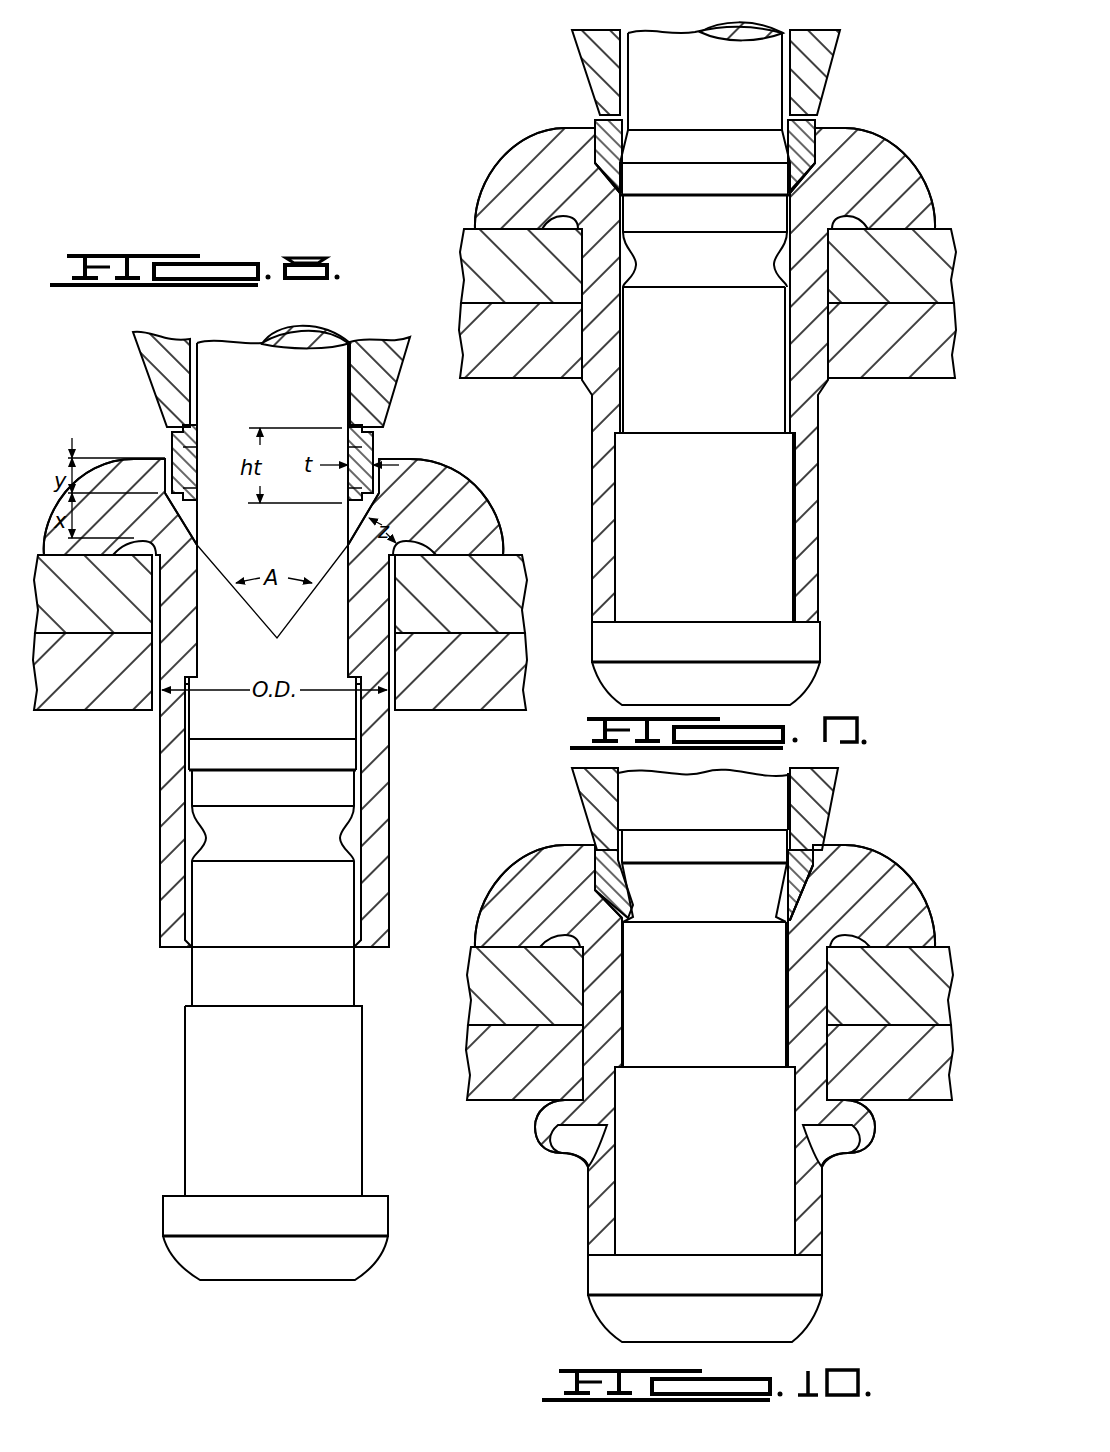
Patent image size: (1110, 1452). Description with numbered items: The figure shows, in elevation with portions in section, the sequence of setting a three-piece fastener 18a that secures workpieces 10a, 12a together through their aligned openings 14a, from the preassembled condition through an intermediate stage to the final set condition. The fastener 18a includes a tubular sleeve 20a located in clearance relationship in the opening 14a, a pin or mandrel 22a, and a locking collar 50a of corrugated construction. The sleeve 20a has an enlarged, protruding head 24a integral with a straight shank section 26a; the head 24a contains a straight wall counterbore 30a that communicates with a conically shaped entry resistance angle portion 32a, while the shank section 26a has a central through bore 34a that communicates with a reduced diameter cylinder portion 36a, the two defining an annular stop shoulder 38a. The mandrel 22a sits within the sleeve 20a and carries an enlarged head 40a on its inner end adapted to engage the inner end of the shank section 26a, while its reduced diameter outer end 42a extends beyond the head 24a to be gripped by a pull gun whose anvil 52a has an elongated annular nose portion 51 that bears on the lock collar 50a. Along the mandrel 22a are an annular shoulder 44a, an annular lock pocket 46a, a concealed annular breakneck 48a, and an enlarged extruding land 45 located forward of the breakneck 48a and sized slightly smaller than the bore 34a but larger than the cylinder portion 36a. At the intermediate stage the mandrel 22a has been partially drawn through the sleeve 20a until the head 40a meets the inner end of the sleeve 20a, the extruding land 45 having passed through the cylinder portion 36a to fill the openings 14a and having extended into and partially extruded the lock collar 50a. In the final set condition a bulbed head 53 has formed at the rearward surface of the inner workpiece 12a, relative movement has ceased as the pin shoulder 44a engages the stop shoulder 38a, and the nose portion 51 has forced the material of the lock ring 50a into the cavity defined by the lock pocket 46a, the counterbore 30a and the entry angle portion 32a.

In FIG. 8, the workpiece 10a is at (78, 611).
In FIG. 9, the workpiece 10a is at (506, 268).
In FIG. 10, the workpiece 10a is at (510, 988).
In FIG. 8, the workpiece 12a is at (80, 681).
In FIG. 9, the workpiece 12a is at (512, 358).
In FIG. 10, the workpiece 12a is at (514, 1078).
In FIG. 8, the aligned openings 14a is at (152, 606).
In FIG. 9, the aligned openings 14a is at (590, 278).
In FIG. 10, the aligned openings 14a is at (590, 1002).
In FIG. 8, the fastener 18a is at (150, 966).
In FIG. 9, the fastener 18a is at (838, 546).
In FIG. 10, the fastener 18a is at (846, 1236).
In FIG. 8, the tubular sleeve 20a is at (393, 790).
In FIG. 9, the tubular sleeve 20a is at (822, 428).
In FIG. 10, the tubular sleeve 20a is at (705, 1050).
In FIG. 8, the pin or mandrel 22a is at (365, 983).
In FIG. 9, the pin or mandrel 22a is at (796, 514).
In FIG. 10, the pin or mandrel 22a is at (798, 1196).
In FIG. 8, the head 24a is at (432, 492).
In FIG. 9, the head 24a is at (515, 170).
In FIG. 10, the head 24a is at (532, 878).
In FIG. 8, the shank section 26a is at (160, 728).
In FIG. 9, the shank section 26a is at (606, 410).
In FIG. 10, the shank section 26a is at (602, 1236).
In FIG. 8, the counterbore 30a is at (163, 455).
In FIG. 9, the counterbore 30a is at (600, 128).
In FIG. 10, the counterbore 30a is at (600, 852).
In FIG. 8, the entry resistance angle portion 32a is at (199, 519).
In FIG. 9, the entry resistance angle portion 32a is at (600, 176).
In FIG. 10, the entry resistance angle portion 32a is at (602, 896).
In FIG. 8, the through bore 34a is at (185, 823).
In FIG. 9, the through bore 34a is at (622, 500).
In FIG. 10, the through bore 34a is at (620, 1202).
In FIG. 8, the cylinder portion 36a is at (197, 637).
In FIG. 9, the cylinder portion 36a is at (784, 312).
In FIG. 10, the cylinder portion 36a is at (624, 960).
In FIG. 8, the stop shoulder 38a is at (363, 682).
In FIG. 9, the stop shoulder 38a is at (624, 376).
In FIG. 10, the stop shoulder 38a is at (624, 1070).
In FIG. 8, the enlarged head 40a is at (176, 1215).
In FIG. 9, the enlarged head 40a is at (816, 640).
In FIG. 10, the enlarged head 40a is at (606, 1272).
In FIG. 8, the outer end 42a is at (226, 353).
In FIG. 9, the outer end 42a is at (660, 82).
In FIG. 8, the annular shoulder 44a is at (240, 1006).
In FIG. 9, the annular shoulder 44a is at (710, 432).
In FIG. 10, the annular shoulder 44a is at (722, 1066).
In FIG. 8, the extruding land 45 is at (186, 733).
In FIG. 9, the extruding land 45 is at (642, 160).
In FIG. 8, the lock pocket 46a is at (205, 842).
In FIG. 9, the lock pocket 46a is at (632, 258).
In FIG. 10, the lock pocket 46a is at (634, 896).
In FIG. 8, the breakneck 48a is at (225, 772).
In FIG. 9, the breakneck 48a is at (705, 194).
In FIG. 10, the breakneck 48a is at (700, 830).
In FIG. 8, the locking collar 50a is at (374, 462).
In FIG. 9, the locking collar 50a is at (802, 146).
In FIG. 10, the locking collar 50a is at (806, 864).
In FIG. 8, the nose portion 51 is at (384, 422).
In FIG. 9, the nose portion 51 is at (818, 118).
In FIG. 10, the nose portion 51 is at (822, 850).
In FIG. 8, the anvil 52a is at (378, 342).
In FIG. 9, the anvil 52a is at (826, 64).
In FIG. 10, the anvil 52a is at (832, 790).
In FIG. 10, the bulbed head 53 is at (536, 1122).